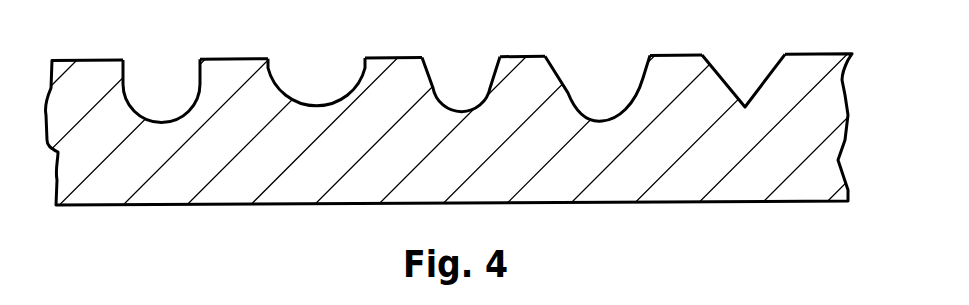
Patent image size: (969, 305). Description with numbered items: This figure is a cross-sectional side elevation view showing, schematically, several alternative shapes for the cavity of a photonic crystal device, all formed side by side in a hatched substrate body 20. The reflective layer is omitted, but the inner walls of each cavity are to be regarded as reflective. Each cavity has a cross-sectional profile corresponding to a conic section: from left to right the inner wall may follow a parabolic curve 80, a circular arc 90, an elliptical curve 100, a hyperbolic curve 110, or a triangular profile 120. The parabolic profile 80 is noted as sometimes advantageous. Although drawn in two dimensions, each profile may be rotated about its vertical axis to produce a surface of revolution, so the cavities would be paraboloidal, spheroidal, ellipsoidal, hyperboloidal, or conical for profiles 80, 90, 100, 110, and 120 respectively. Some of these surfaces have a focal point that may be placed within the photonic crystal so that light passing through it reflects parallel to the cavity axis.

The substrate body with hatched cross-section 20 is at (425, 170).
The parabolic curve 80 is at (137, 33).
The circular arc 90 is at (291, 28).
The elliptical curve 100 is at (446, 28).
The hyperbolic curve 110 is at (575, 22).
The triangular profile 120 is at (737, 20).